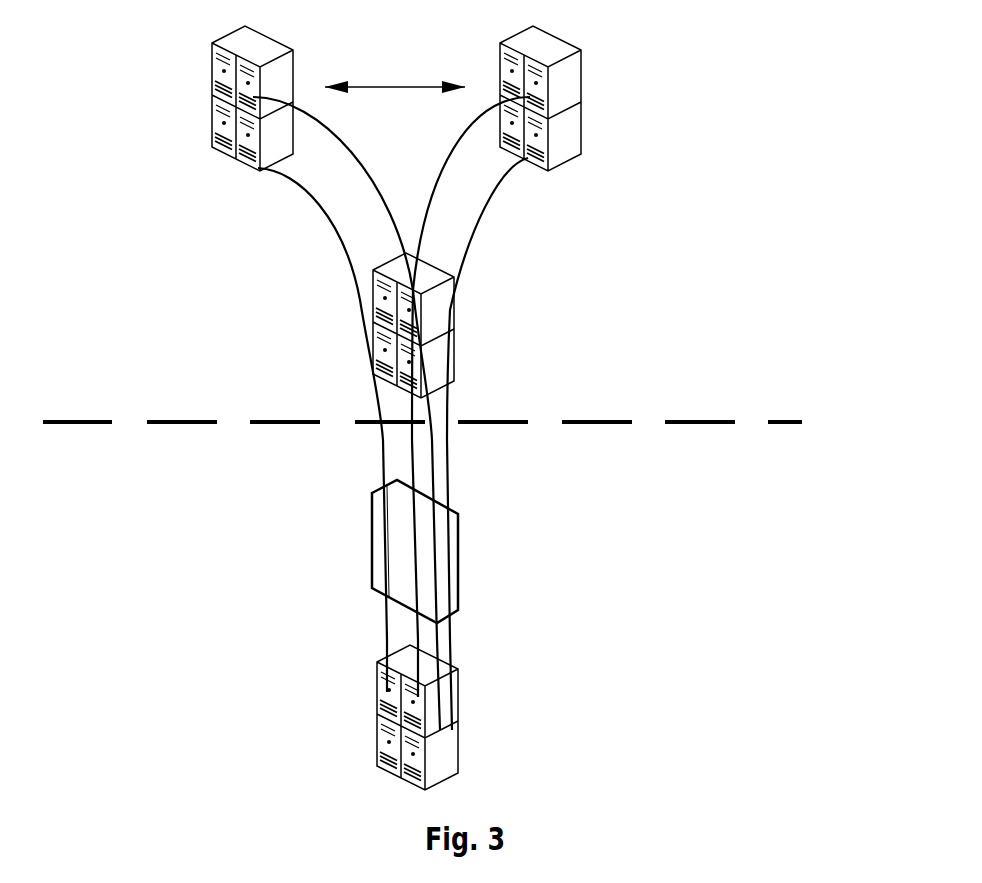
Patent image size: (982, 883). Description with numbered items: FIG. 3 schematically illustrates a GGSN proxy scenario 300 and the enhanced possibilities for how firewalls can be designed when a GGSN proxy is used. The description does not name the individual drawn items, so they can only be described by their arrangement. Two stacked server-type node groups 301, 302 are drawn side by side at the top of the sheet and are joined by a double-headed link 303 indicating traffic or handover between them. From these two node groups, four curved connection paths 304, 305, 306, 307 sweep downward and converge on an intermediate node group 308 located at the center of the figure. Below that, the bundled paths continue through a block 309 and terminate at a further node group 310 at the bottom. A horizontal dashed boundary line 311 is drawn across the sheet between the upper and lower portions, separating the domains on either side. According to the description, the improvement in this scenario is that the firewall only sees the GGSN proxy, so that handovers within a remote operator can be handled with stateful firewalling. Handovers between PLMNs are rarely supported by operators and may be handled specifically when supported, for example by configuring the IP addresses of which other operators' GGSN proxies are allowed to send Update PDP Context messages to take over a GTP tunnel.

The data replication system 300 is at (623, 347).
The first server cluster 301 is at (583, 115).
The second server cluster 302 is at (232, 34).
The inter-cluster communication link 303 is at (410, 85).
The first data path from second cluster 304 is at (348, 145).
The first data path from first cluster 305 is at (447, 173).
The second data path from second cluster 306 is at (350, 270).
The second data path from first cluster 307 is at (500, 187).
The intermediate server 308 is at (457, 296).
The network switch 309 is at (372, 550).
The remote server 310 is at (378, 745).
The site boundary line 311 is at (165, 425).